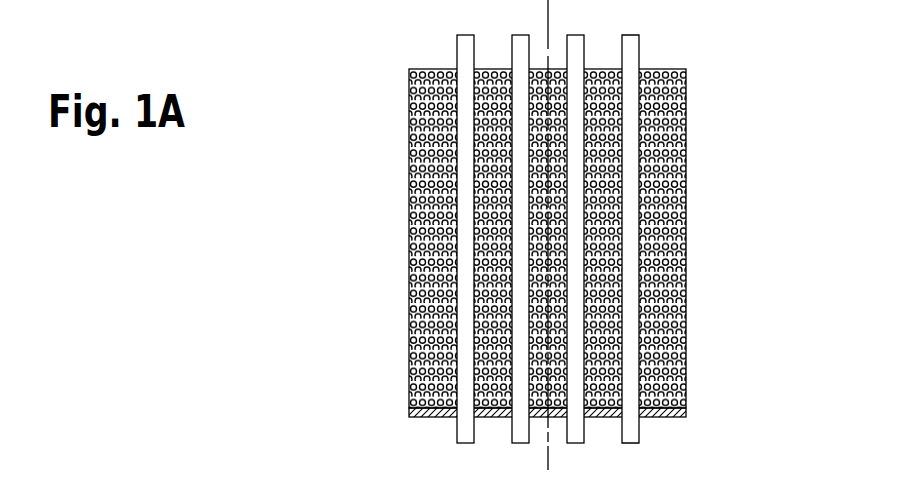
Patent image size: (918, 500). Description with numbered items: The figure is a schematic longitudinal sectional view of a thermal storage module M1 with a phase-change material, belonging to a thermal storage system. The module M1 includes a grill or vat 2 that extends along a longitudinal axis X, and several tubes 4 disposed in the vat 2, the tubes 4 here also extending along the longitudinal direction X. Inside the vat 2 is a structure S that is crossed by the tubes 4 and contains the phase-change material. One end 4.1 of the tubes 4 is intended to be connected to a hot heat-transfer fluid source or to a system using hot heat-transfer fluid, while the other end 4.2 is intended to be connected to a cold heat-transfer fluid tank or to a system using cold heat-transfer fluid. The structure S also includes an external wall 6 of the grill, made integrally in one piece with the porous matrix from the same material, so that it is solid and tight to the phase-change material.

The vat 2 is at (686, 212).
The tubes 4 is at (603, 233).
The end of the tubes 4.1 is at (639, 52).
The end of the tubes 4.2 is at (639, 425).
The external wall 6 is at (424, 417).
The structure S is at (553, 256).
The thermal storage module M1 is at (590, 233).
The longitudinal axis X is at (548, 452).